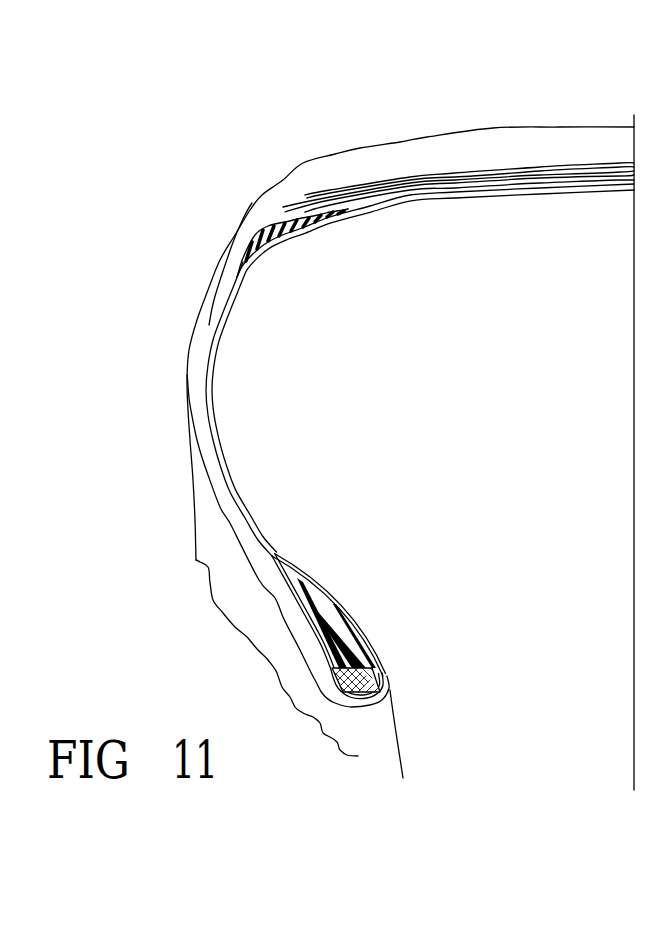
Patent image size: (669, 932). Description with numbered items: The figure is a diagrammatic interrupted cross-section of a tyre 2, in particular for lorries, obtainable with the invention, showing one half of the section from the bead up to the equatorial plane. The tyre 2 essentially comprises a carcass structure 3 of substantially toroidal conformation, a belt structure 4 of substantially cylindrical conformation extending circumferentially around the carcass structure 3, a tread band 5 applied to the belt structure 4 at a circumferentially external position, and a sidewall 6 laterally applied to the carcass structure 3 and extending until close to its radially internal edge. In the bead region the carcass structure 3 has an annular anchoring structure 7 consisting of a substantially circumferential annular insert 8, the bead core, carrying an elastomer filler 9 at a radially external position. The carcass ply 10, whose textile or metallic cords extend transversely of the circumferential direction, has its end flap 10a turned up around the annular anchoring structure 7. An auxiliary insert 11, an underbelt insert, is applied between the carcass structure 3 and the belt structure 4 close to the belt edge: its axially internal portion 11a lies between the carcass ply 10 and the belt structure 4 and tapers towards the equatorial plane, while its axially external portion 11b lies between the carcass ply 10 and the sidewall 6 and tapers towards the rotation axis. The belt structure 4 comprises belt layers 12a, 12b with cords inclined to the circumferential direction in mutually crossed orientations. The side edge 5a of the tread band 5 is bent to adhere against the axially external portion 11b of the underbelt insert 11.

The tyre 2 is at (147, 408).
The carcass structure 3 is at (387, 598).
The belt structure 4 is at (445, 123).
The tread band 5 is at (487, 150).
The side edges of the tread band 5a is at (238, 257).
The sidewalls 6 is at (195, 372).
The annular anchoring structure 7 is at (364, 630).
The annular insert 8 is at (388, 680).
The elastomer filler 9 is at (322, 616).
The carcass ply 10 is at (220, 447).
The end flaps of the carcass ply 10a is at (305, 607).
The auxiliary insert 11 is at (274, 224).
The axially internal portion of the underbelt insert 11a is at (340, 214).
The axially external portion of the underbelt insert 11b is at (240, 272).
The belt layer 12a is at (342, 190).
The belt layer 12b is at (440, 177).